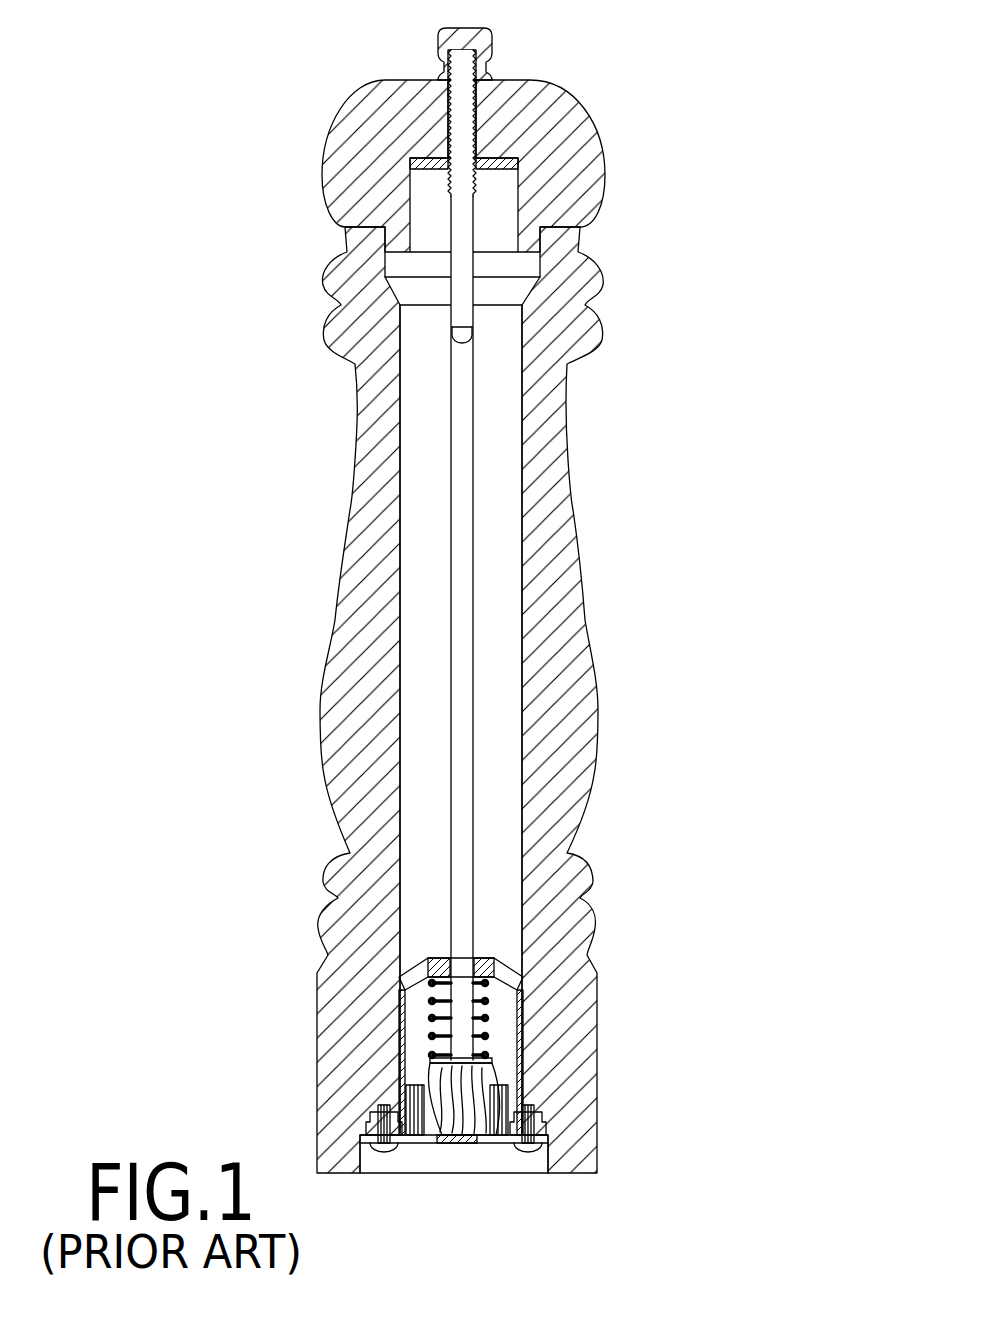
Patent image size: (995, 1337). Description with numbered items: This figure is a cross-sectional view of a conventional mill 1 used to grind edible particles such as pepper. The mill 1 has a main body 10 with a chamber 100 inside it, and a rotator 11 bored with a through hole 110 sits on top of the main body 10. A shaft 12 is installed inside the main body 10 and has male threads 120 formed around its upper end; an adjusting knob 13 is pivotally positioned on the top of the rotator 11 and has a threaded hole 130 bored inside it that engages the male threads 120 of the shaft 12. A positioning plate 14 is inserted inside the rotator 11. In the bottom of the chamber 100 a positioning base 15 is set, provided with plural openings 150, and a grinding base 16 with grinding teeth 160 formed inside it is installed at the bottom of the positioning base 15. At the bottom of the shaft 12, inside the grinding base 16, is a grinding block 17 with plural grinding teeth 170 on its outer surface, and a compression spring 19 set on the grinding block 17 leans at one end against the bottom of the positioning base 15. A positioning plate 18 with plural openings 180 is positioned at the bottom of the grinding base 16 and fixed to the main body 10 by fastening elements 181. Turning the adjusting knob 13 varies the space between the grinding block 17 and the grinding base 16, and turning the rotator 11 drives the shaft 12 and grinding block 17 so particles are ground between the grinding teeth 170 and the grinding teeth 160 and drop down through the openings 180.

The mill 1 is at (632, 590).
The main body 10 is at (580, 717).
The chamber 100 is at (500, 653).
The rotator 11 is at (583, 182).
The through hole 110 is at (478, 122).
The shaft 12 is at (462, 522).
The male threads 120 is at (450, 125).
The adjusting knob 13 is at (483, 52).
The threaded hole 130 is at (447, 52).
The positioning plate 14 is at (505, 161).
The positioning base 15 is at (518, 1057).
The openings 150 is at (498, 975).
The grinding base 16 is at (520, 1103).
The grinding teeth 160 is at (415, 1100).
The grinding block 17 is at (485, 1127).
The grinding teeth 170 is at (458, 1136).
The positioning plate 18 is at (355, 1147).
The openings 180 is at (388, 1146).
The fastening elements 181 is at (532, 1147).
The compression spring 19 is at (433, 1020).